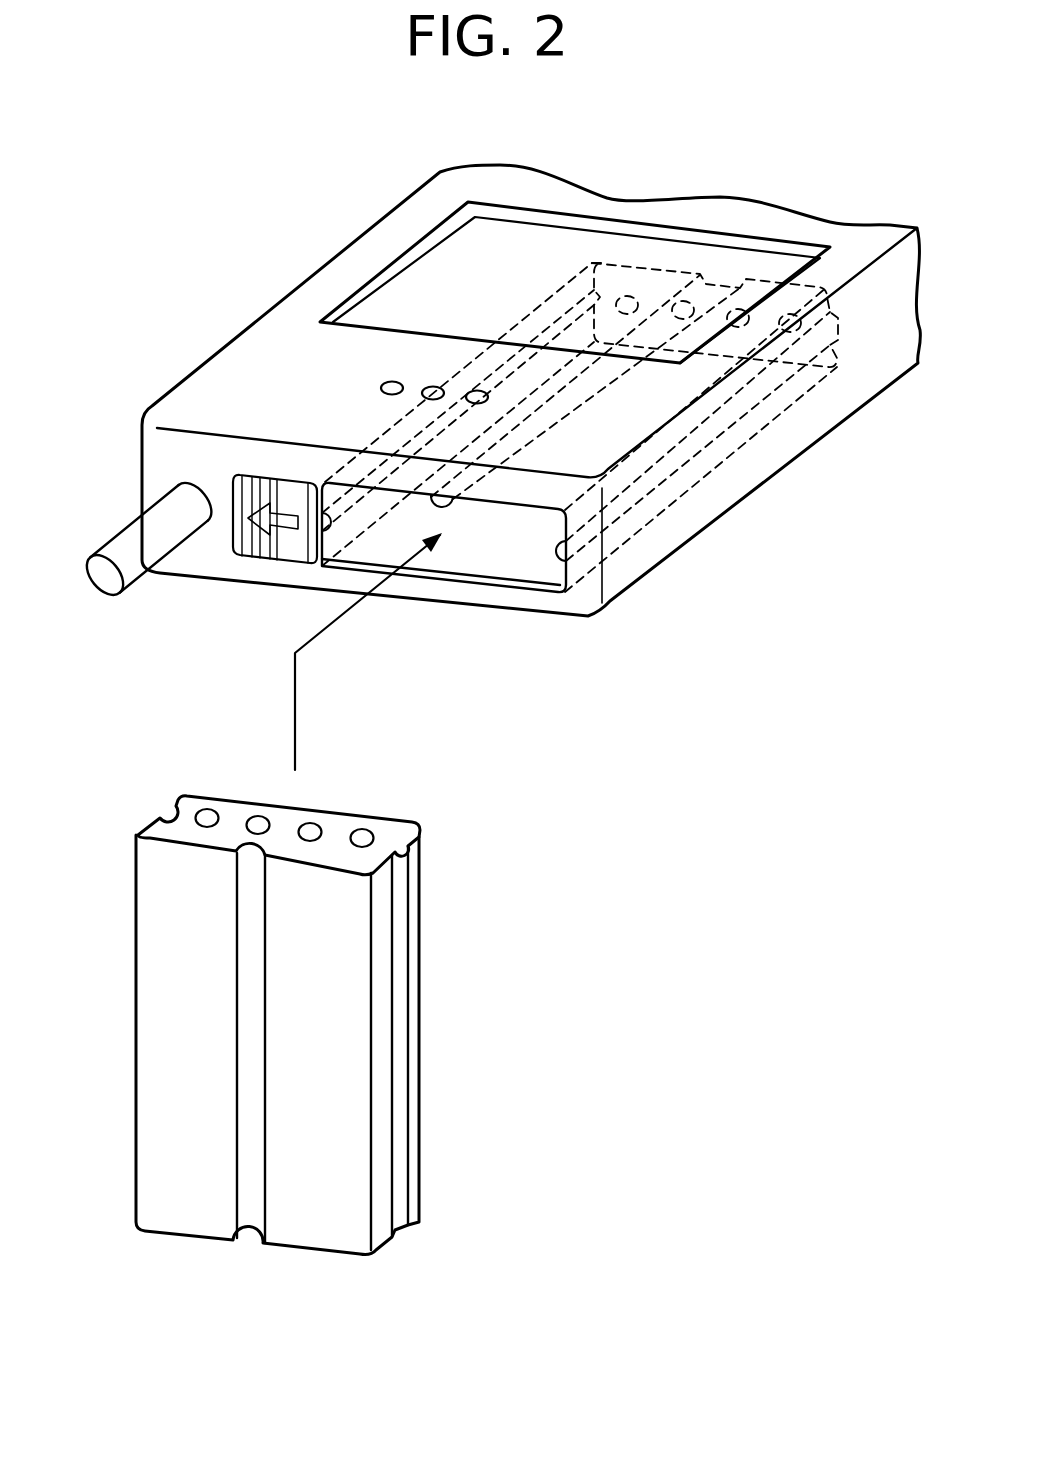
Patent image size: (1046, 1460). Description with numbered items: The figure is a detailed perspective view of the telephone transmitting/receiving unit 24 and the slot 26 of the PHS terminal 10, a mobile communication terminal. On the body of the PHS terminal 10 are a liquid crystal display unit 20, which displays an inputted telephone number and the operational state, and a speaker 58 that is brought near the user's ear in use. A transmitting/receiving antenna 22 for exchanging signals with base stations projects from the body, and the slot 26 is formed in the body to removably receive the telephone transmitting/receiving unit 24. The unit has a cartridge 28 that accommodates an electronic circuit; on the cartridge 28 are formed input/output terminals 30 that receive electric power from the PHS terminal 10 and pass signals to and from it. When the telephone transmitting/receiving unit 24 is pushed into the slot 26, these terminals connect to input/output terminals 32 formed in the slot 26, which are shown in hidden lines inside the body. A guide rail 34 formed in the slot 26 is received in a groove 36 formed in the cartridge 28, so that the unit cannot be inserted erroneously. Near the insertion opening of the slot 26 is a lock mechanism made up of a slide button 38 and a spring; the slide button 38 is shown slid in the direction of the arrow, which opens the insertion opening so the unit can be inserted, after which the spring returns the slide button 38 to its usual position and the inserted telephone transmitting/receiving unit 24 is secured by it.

The PHS terminal 10 is at (826, 482).
The liquid crystal display unit 20 is at (452, 250).
The transmitting/receiving antenna 22 is at (130, 537).
The telephone transmitting/receiving unit 24 is at (440, 812).
The slot 26 is at (530, 558).
The cartridge 28 is at (157, 905).
The input/output terminals 30 is at (355, 828).
The input/output terminals 32 is at (737, 307).
The guide rail 34 is at (453, 512).
The groove 36 is at (248, 1222).
The slide button 38 is at (233, 478).
The speaker 58 is at (378, 388).